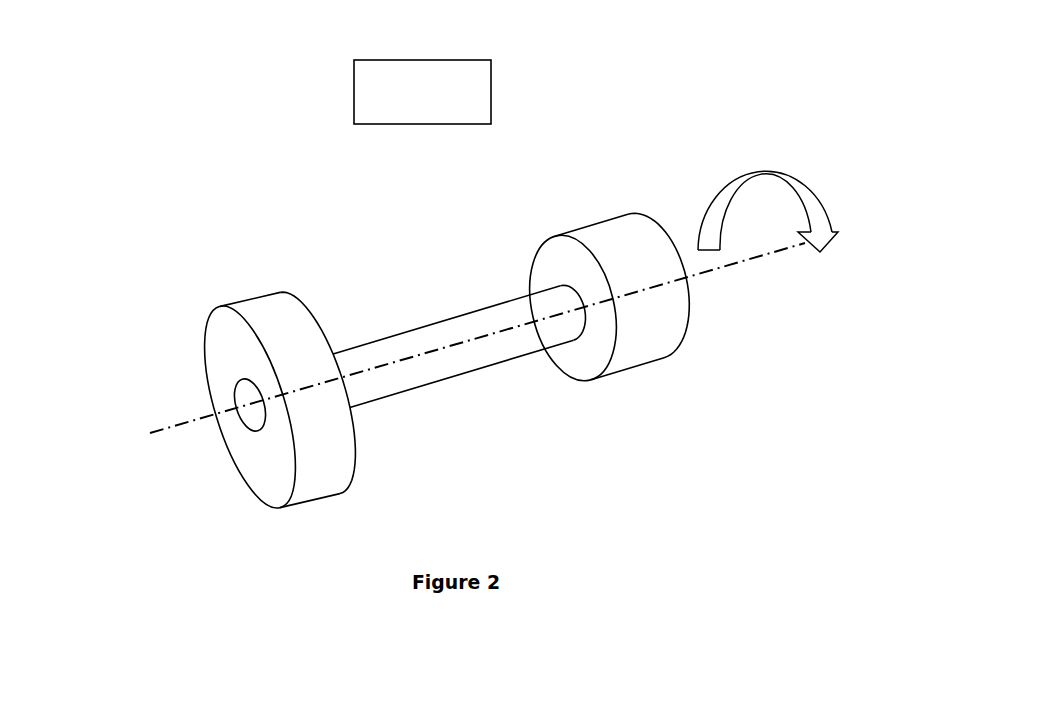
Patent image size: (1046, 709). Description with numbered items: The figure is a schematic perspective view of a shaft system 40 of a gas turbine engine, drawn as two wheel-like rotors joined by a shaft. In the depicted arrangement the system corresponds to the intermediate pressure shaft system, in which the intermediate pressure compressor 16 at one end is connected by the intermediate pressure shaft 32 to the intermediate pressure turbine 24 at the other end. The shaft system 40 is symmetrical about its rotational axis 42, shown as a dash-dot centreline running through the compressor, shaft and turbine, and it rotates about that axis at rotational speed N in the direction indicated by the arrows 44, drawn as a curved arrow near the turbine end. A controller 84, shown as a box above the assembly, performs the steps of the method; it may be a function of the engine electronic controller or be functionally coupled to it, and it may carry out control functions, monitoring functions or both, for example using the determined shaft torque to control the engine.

The intermediate pressure compressor 16 is at (345, 438).
The intermediate pressure turbine 24 is at (677, 310).
The intermediate pressure shaft 32 is at (480, 367).
The shaft system 40 is at (210, 253).
The rotational axis 42 is at (208, 418).
The arrows 44 is at (763, 170).
The controller 84 is at (458, 80).